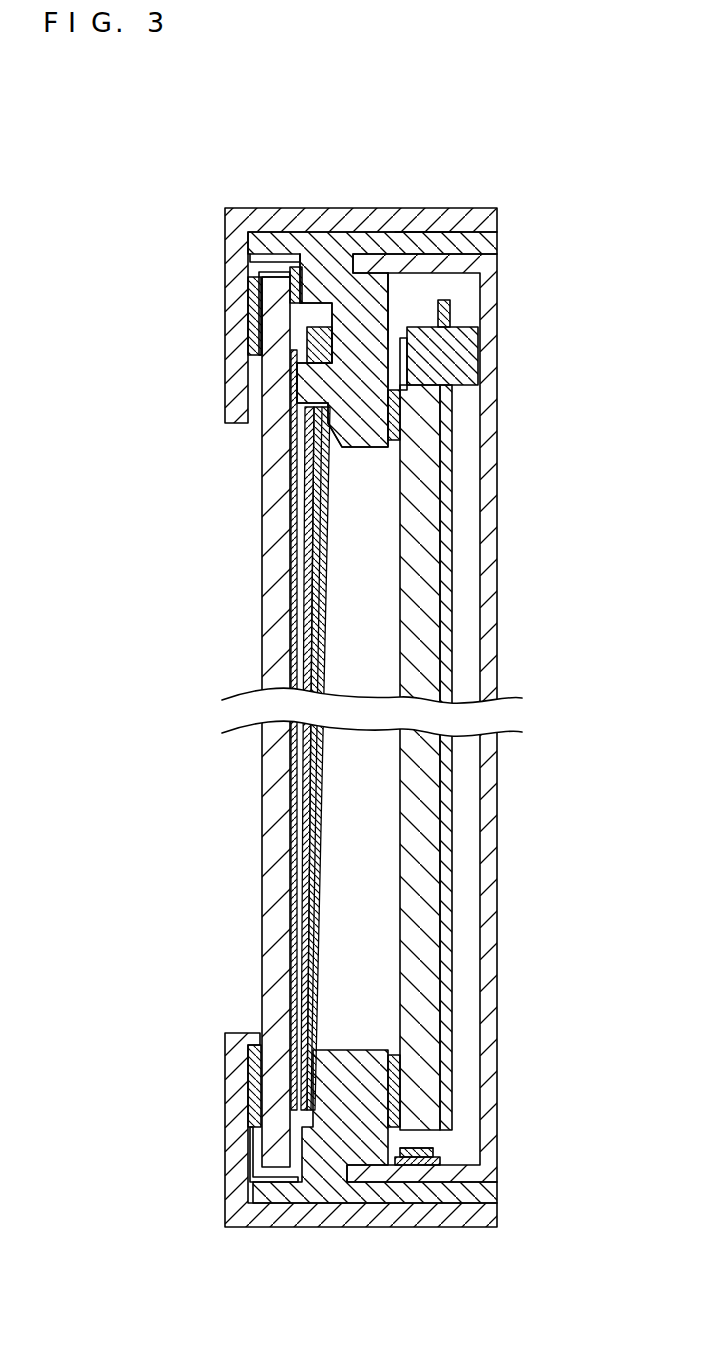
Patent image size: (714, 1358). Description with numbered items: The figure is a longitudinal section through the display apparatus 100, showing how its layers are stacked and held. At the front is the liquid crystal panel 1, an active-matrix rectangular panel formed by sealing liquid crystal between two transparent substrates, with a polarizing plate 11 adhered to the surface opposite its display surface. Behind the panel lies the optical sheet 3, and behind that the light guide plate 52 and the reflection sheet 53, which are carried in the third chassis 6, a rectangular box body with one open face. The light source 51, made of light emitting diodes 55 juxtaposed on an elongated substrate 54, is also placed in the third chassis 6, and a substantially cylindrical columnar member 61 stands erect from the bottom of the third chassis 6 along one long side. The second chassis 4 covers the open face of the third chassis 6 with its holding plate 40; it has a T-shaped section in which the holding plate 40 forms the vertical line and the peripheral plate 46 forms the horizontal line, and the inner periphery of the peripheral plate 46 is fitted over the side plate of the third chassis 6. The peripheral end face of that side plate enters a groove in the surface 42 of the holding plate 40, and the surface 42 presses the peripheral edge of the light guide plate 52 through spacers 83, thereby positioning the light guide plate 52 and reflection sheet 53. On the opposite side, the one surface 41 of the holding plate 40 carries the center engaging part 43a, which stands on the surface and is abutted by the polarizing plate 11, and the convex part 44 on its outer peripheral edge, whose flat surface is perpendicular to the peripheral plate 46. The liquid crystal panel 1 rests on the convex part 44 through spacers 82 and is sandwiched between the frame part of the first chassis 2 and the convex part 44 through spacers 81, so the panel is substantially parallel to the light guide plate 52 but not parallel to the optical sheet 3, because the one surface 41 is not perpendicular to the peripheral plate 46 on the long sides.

The display apparatus 100 is at (211, 174).
The liquid crystal panel 1 is at (270, 610).
The first chassis 2 is at (280, 213).
The optical sheet 3 is at (307, 550).
The second chassis 4 is at (499, 243).
The third chassis 6 is at (492, 427).
The polarizing plate 11 is at (294, 788).
The holding plate 40 is at (328, 272).
The one surface 41 is at (294, 305).
The surface opposite to the surface 41 42 is at (463, 322).
The center engaging part 43a is at (298, 383).
The convex part 44 is at (299, 262).
The peripheral plate 46 is at (425, 238).
The light source 51 is at (449, 1150).
The light guide plate 52 is at (431, 580).
The reflection sheet 53 is at (448, 510).
The substrate 54 is at (441, 1160).
The light emitting diode 55 is at (440, 1148).
The columnar member 61 is at (477, 308).
The spacer 81 is at (252, 340).
The spacer 82 is at (289, 287).
The spacer 83 is at (393, 446).